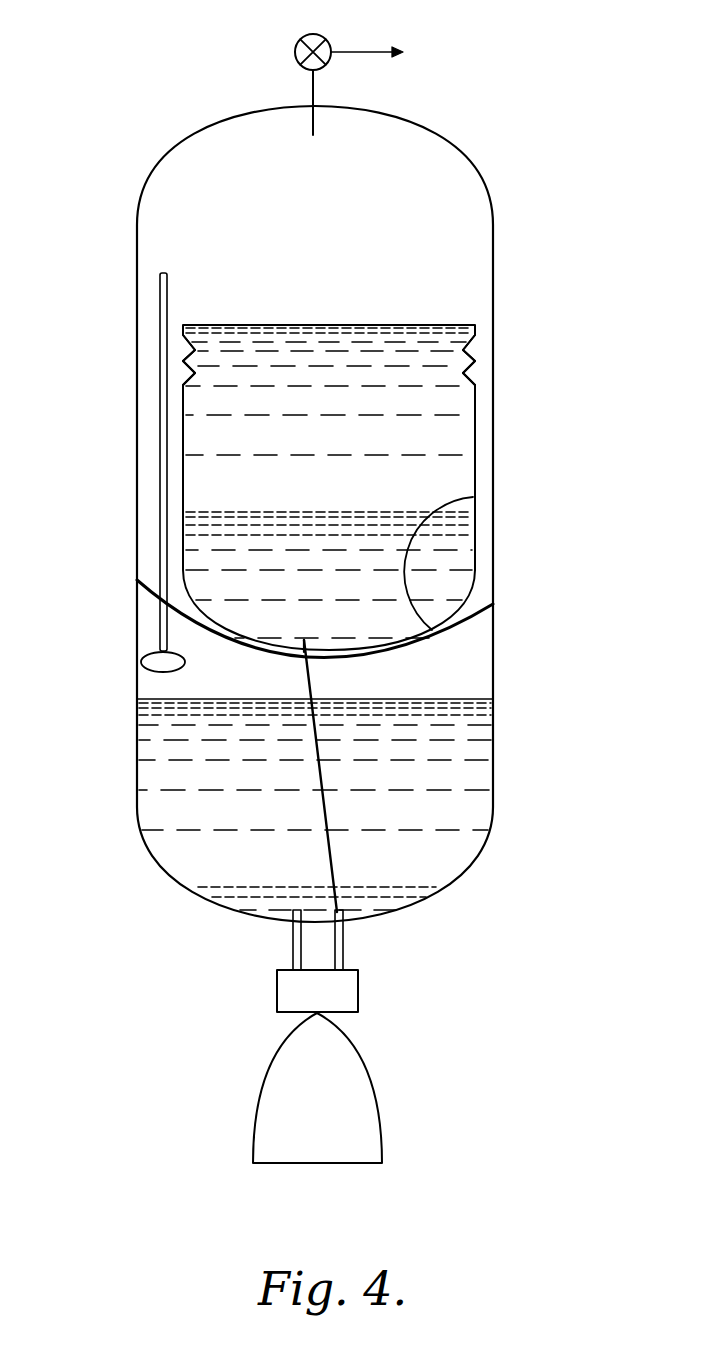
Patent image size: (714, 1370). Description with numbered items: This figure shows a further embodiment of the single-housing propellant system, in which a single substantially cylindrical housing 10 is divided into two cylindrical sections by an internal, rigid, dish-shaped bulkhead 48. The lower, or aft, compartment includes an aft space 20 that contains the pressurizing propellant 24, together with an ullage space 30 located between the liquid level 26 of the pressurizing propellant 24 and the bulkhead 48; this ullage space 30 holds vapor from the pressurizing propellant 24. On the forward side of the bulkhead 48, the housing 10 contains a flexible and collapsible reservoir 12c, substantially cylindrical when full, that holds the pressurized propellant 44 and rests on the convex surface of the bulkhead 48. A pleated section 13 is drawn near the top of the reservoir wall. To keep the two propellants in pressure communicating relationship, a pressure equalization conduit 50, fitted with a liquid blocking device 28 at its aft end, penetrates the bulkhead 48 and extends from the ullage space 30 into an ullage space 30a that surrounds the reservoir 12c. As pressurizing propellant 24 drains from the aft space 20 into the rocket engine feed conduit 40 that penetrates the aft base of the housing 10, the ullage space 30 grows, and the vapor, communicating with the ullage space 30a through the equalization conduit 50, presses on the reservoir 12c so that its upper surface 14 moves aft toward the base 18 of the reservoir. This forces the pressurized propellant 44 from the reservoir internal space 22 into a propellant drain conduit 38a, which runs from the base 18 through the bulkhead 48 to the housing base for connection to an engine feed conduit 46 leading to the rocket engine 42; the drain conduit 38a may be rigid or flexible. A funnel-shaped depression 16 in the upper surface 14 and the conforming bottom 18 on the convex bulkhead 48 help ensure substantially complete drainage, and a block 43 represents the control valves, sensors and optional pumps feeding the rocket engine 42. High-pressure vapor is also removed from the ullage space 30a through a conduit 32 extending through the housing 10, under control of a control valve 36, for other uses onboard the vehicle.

The housing 10 is at (487, 185).
The flexible and collapsible reservoir 12c is at (477, 526).
The pleated section of bladder 13 is at (482, 372).
The upper surface of the reservoir 14 is at (412, 324).
The funnel-shaped depression 16 is at (294, 637).
The base of the reservoir 18 is at (475, 495).
The aft space 20 is at (450, 770).
The reservoir internal space 22 is at (437, 470).
The pressurizing propellant 24 is at (381, 825).
The liquid level 26 is at (455, 699).
The liquid blocking device 28 is at (150, 665).
The ullage space 30 is at (256, 695).
The ullage space 30a is at (340, 239).
The conduit 32 is at (311, 95).
The control valve 36 is at (302, 40).
The propellant drain conduit 38a is at (318, 765).
The rocket engine feed conduit 40 is at (293, 948).
The rocket engine 42 is at (331, 1110).
The block 43 is at (358, 1002).
The pressurized propellant 44 is at (342, 494).
The engine feed conduit 46 is at (343, 948).
The dish-shaped bulkhead 48 is at (490, 634).
The pressure equalization conduit 50 is at (160, 302).